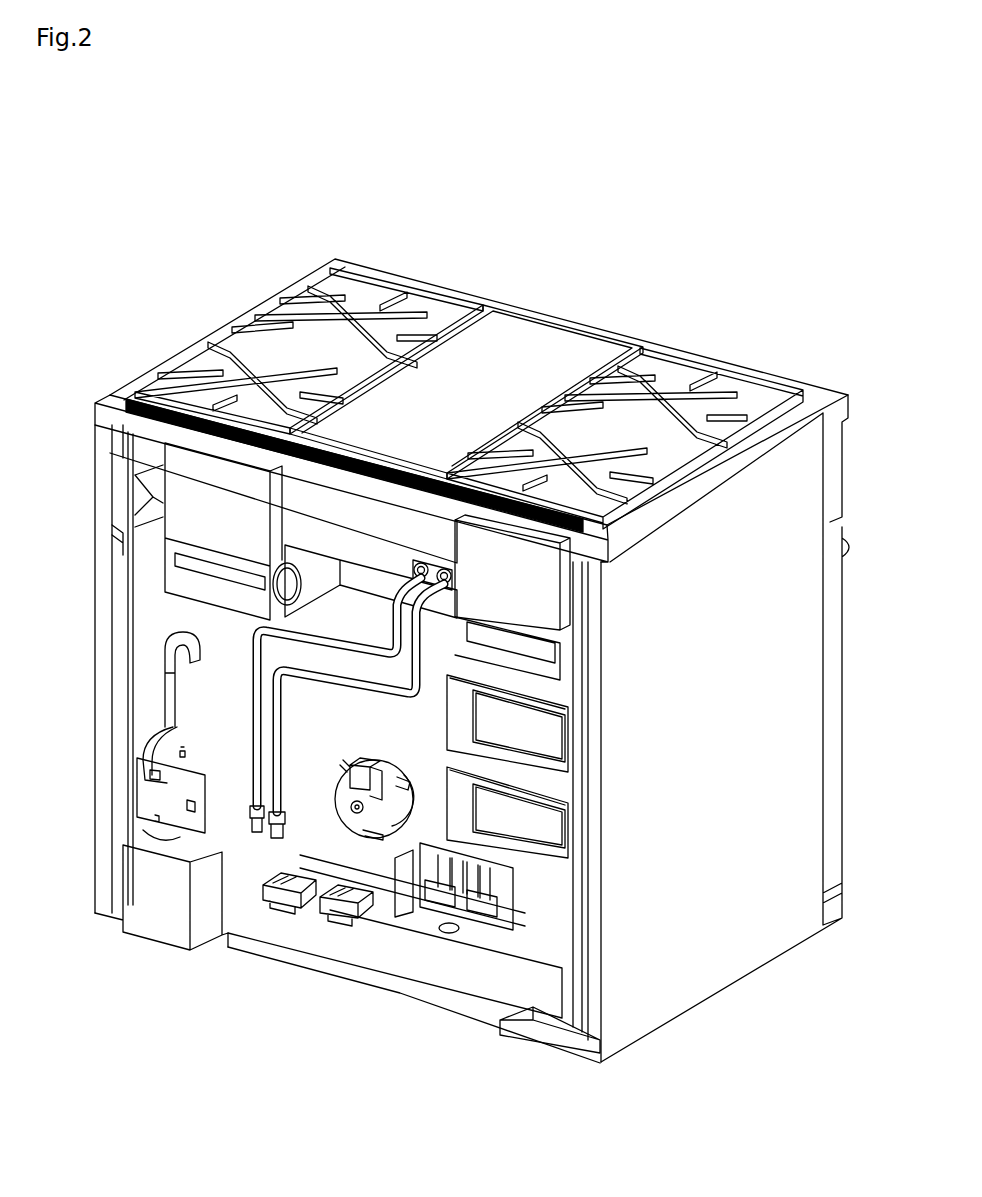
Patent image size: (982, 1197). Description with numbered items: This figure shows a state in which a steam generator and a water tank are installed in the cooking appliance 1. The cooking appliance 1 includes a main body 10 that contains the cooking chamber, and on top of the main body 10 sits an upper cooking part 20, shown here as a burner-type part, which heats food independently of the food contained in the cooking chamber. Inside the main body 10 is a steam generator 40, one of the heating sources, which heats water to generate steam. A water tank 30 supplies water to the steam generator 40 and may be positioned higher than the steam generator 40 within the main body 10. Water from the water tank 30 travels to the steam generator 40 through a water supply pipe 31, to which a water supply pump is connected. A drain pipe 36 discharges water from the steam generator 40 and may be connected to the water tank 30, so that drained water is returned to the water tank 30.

The cooking appliance 1 is at (590, 186).
The main body 10 is at (323, 797).
The upper cooking part 20 is at (313, 271).
The water tank 30 is at (420, 563).
The water supply pipe 31 is at (395, 700).
The drain pipe 36 is at (315, 643).
The steam generator 40 is at (163, 843).